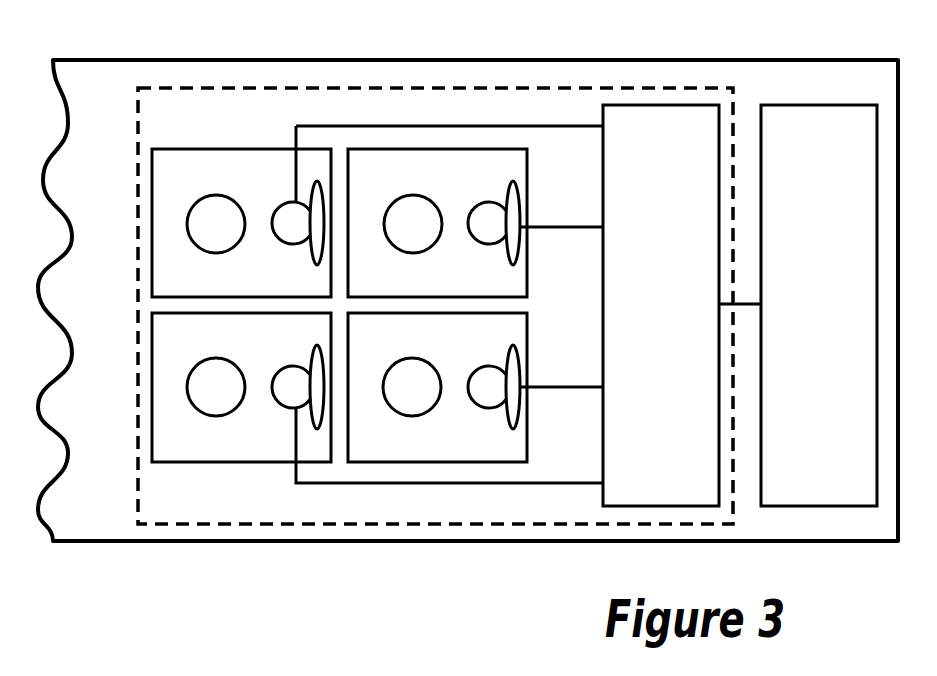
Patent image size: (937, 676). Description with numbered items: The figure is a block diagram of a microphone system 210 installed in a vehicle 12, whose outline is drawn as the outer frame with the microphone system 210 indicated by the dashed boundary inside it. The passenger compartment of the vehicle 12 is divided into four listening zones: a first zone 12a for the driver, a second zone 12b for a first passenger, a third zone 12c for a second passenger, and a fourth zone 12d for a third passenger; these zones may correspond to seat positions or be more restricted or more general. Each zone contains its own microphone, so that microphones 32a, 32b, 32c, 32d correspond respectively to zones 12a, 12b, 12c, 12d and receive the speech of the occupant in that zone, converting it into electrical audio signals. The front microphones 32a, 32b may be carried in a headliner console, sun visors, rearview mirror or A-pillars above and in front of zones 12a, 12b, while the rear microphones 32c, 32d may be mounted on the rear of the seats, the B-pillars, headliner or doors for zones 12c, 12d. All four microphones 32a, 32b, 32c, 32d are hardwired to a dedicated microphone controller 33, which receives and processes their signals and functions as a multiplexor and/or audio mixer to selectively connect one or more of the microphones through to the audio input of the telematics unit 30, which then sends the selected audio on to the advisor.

The vehicle 12 is at (105, 52).
The microphone system 210 is at (491, 78).
The first zone 12a is at (399, 187).
The second zone 12b is at (399, 348).
The third zone 12c is at (203, 187).
The fourth zone 12d is at (203, 348).
The microphone 32a is at (486, 234).
The microphone 32b is at (486, 398).
The microphone 32c is at (287, 242).
The microphone 32d is at (283, 388).
The microphone controller 33 is at (661, 305).
The telematics unit 30 is at (819, 305).